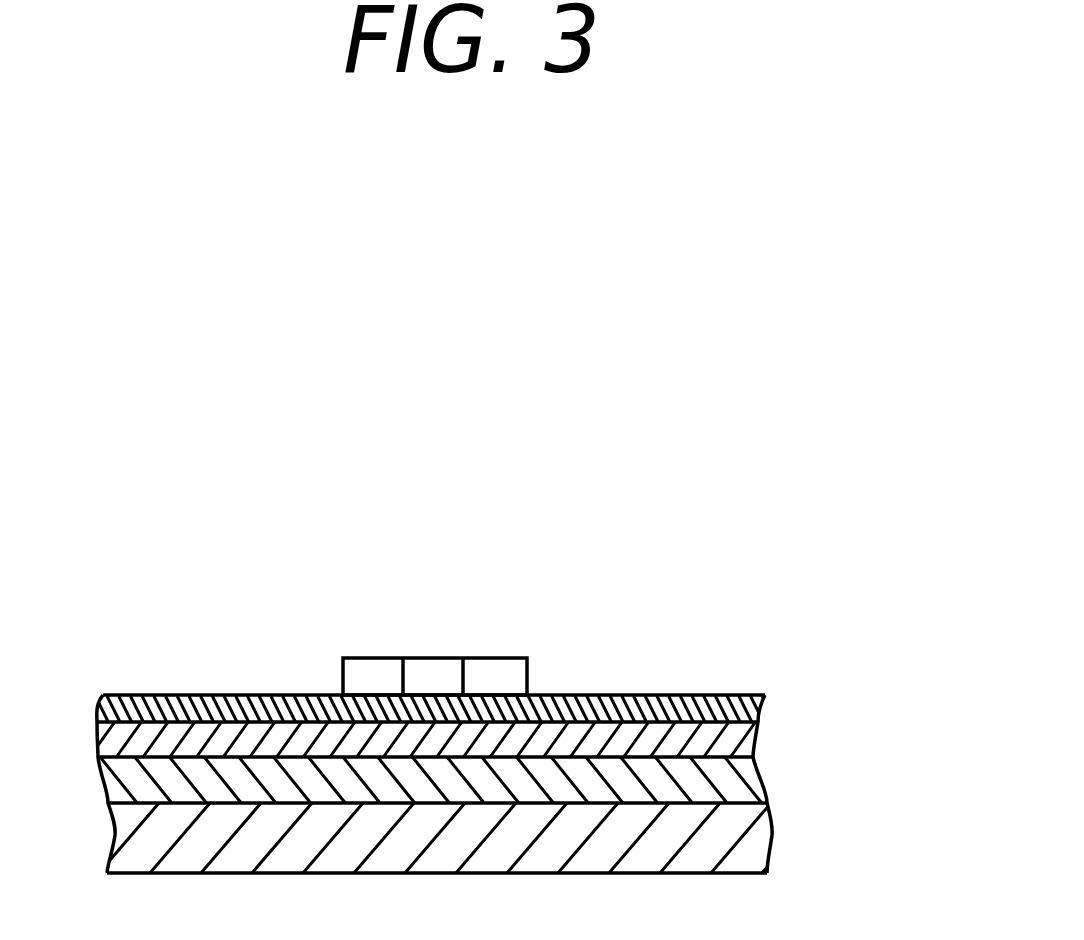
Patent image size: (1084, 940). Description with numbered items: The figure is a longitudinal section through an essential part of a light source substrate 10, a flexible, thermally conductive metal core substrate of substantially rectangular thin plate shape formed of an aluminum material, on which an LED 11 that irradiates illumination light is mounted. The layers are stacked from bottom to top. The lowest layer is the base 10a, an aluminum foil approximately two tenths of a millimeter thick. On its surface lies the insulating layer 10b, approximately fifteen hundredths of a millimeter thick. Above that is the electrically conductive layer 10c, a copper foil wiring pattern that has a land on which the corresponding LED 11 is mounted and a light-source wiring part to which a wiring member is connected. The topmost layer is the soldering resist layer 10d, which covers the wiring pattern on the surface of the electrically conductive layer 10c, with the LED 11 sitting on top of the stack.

The light source substrate 10 is at (658, 447).
The base 10a is at (772, 840).
The insulating layer 10b is at (756, 768).
The electrically conductive layer 10c is at (753, 738).
The soldering resist layer 10d is at (732, 693).
The LED 11 is at (432, 676).